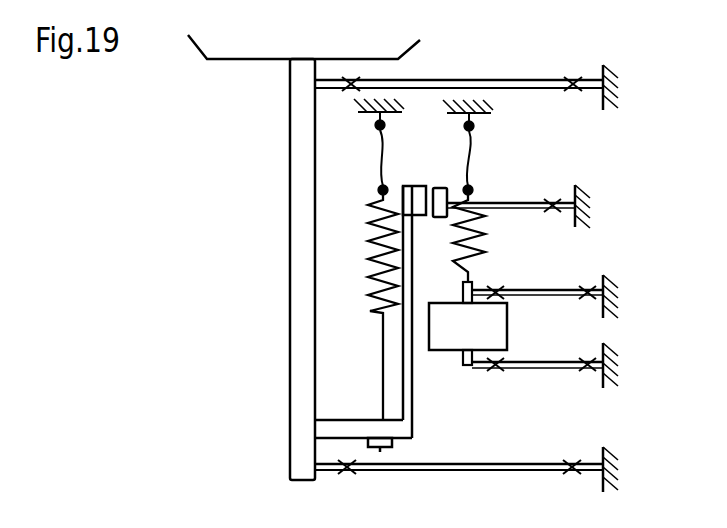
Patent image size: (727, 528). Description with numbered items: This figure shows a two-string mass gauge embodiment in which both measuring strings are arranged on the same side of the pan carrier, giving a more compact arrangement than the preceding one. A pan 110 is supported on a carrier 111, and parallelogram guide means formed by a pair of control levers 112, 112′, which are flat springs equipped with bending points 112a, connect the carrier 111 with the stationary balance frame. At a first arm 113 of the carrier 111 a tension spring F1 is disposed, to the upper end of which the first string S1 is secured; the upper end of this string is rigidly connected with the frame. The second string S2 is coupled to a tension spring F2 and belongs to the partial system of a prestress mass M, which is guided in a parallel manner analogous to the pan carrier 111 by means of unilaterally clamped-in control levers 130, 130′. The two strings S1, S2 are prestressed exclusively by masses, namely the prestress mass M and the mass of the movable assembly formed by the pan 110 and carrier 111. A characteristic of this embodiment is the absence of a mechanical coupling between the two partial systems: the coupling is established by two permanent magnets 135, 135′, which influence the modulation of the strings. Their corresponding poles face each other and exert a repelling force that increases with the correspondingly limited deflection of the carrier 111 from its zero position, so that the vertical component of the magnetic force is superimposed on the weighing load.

The pan 110 is at (266, 59).
The carrier 111 is at (290, 372).
The control lever 112 is at (467, 80).
The control lever 112′ is at (440, 473).
The bending points 112a is at (351, 77).
The first arm 113 is at (341, 420).
The permanent magnet 135 is at (419, 186).
The permanent magnet 135′ is at (438, 188).
The control lever 130 is at (548, 297).
The control lever 130′ is at (548, 370).
The prestress mass M is at (507, 337).
The first string S1 is at (378, 160).
The second string S2 is at (475, 162).
The tension spring F1 is at (367, 237).
The tension spring F2 is at (489, 238).